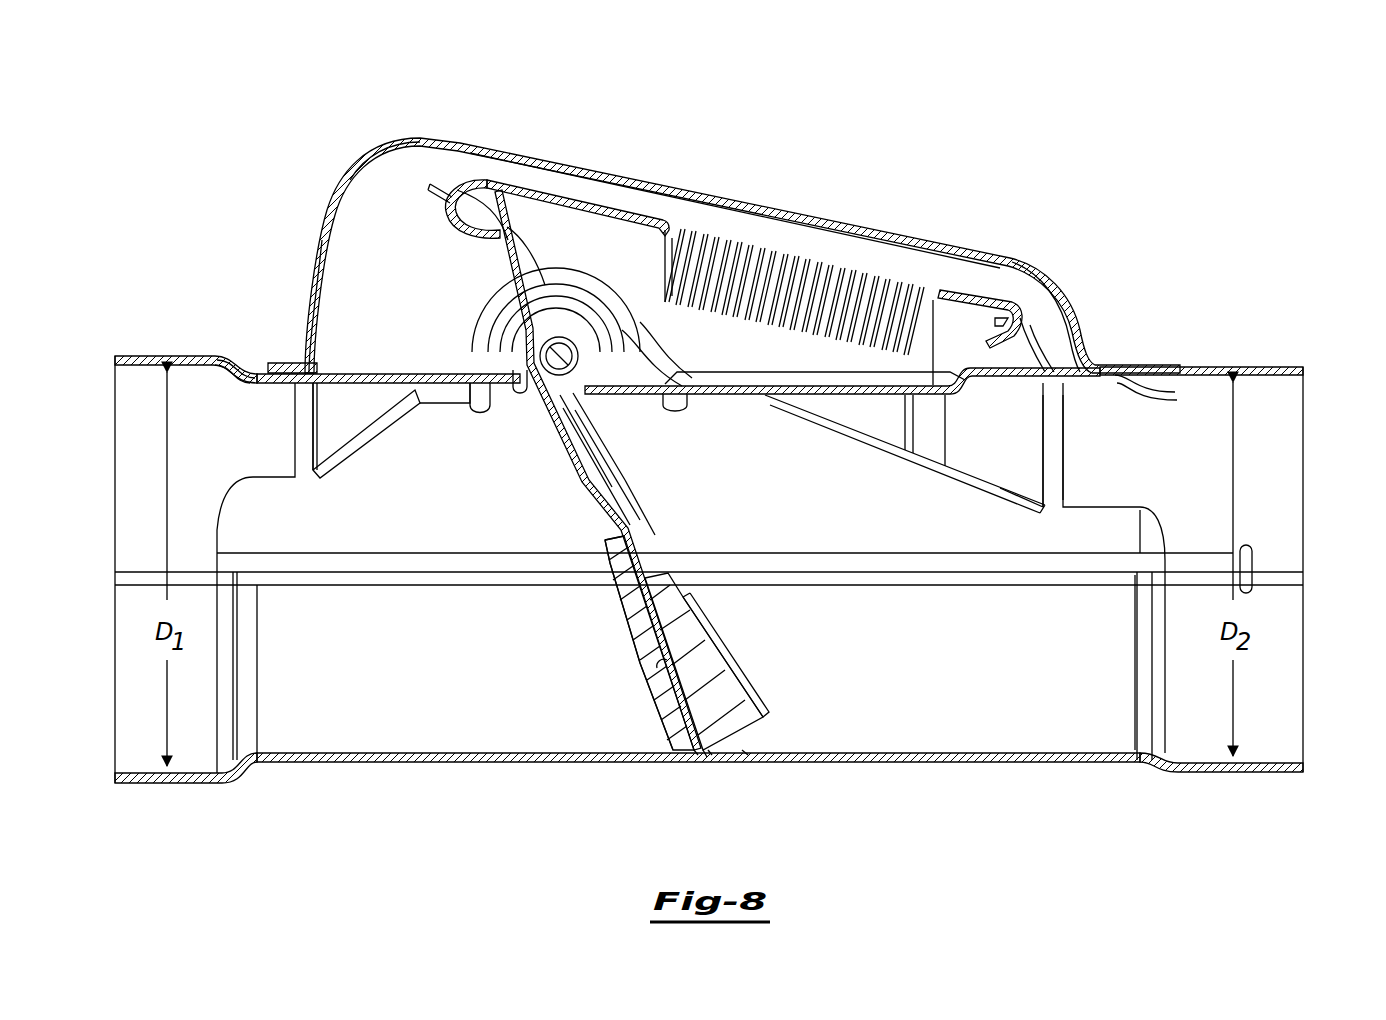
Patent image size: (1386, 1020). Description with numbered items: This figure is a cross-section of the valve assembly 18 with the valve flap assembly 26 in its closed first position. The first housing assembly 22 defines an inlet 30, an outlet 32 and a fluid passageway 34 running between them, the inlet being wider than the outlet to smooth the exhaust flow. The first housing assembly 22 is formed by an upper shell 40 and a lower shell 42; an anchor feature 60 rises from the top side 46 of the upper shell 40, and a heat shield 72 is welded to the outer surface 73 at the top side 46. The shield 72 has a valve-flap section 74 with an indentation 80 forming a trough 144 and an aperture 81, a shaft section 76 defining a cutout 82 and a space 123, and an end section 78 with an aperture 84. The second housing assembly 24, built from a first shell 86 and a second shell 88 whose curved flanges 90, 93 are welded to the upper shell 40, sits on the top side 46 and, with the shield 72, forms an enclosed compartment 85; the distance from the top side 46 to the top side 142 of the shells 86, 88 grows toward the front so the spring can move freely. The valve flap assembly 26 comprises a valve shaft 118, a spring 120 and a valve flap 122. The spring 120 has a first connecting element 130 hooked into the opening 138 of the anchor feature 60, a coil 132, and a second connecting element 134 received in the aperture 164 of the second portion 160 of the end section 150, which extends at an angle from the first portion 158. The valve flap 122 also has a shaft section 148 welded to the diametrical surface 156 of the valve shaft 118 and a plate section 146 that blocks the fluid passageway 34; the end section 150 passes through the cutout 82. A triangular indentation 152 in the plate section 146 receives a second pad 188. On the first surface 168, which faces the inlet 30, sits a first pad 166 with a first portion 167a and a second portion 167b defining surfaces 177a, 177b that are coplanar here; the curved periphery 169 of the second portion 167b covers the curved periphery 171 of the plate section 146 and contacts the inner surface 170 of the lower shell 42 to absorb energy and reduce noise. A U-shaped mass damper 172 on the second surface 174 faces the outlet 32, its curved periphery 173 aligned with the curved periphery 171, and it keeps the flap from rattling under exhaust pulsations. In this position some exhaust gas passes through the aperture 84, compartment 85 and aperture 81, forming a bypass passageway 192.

The valve assembly 18 is at (1097, 128).
The first housing assembly 22 is at (1255, 360).
The second housing assembly 24 is at (800, 205).
The valve flap assembly 26 is at (575, 495).
The inlet 30 is at (115, 650).
The outlet 32 is at (1305, 605).
The fluid passageway 34 is at (1075, 715).
The upper shell 40 is at (220, 352).
The lower shell 42 is at (400, 762).
The top side 46 is at (1172, 365).
The anchor feature 60 is at (1040, 335).
The heat shield 72 is at (1040, 400).
The outer surface 73 is at (325, 373).
The valve-flap section 74 is at (1000, 395).
The shaft section 76 is at (620, 380).
The end section 78 is at (365, 383).
The indentation 80 is at (945, 400).
The aperture 81 is at (925, 400).
The cutout 82 is at (557, 330).
The aperture 84 is at (402, 400).
The compartment 85 is at (380, 190).
The first shell 86 is at (332, 272).
The second shell 88 is at (880, 215).
The curved flange 90 is at (255, 380).
The curved flange 93 is at (1142, 385).
The valve shaft 118 is at (600, 340).
The spring 120 is at (975, 290).
The valve flap 122 is at (620, 535).
The space 123 is at (590, 300).
The first connecting element 130 is at (1025, 270).
The coil 132 is at (825, 260).
The second connecting element 134 is at (662, 212).
The opening 138 is at (1038, 330).
The top side 142 is at (725, 200).
The trough 144 is at (935, 290).
The plate section 146 is at (645, 570).
The shaft section 148 is at (500, 405).
The end section 150 is at (512, 286).
The triangular-shaped indentation 152 is at (548, 455).
The diametrical surface 156 is at (590, 395).
The first portion 158 is at (530, 316).
The second portion 160 is at (440, 182).
The aperture 164 is at (445, 212).
The first pad 166 is at (625, 645).
The first portion 167a is at (625, 615).
The second portion 167b is at (665, 725).
The first surface 168 is at (603, 540).
The curved periphery 169 is at (698, 755).
The inner surface 170 is at (965, 750).
The curved periphery 171 is at (714, 755).
The mass damper 172 is at (770, 725).
The curved periphery 173 is at (745, 755).
The second surface 174 is at (640, 555).
The first surface 177a is at (690, 650).
The second surface 177b is at (730, 718).
The second pad 188 is at (640, 495).
The bypass passageway 192 is at (370, 222).